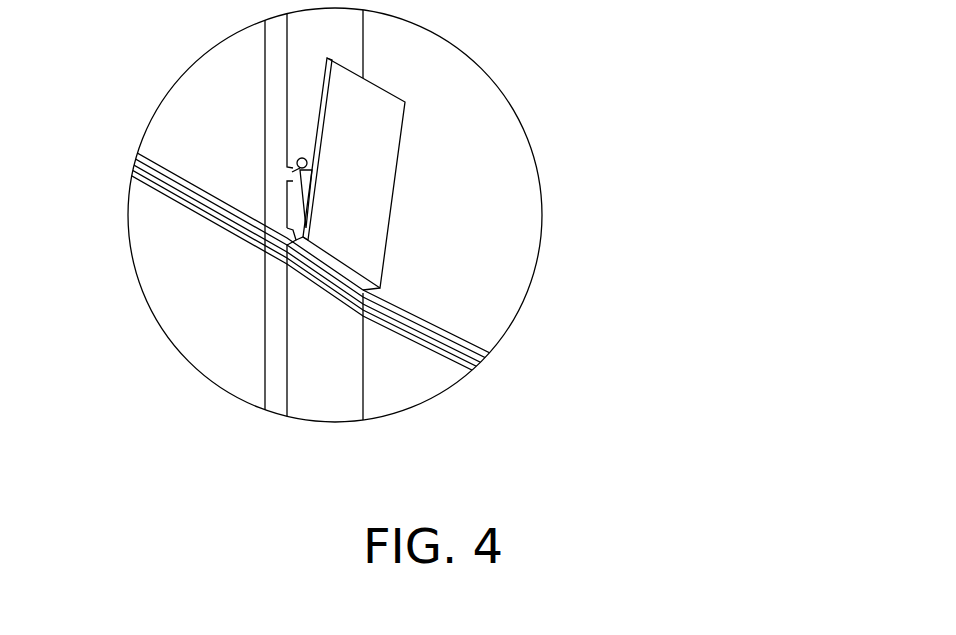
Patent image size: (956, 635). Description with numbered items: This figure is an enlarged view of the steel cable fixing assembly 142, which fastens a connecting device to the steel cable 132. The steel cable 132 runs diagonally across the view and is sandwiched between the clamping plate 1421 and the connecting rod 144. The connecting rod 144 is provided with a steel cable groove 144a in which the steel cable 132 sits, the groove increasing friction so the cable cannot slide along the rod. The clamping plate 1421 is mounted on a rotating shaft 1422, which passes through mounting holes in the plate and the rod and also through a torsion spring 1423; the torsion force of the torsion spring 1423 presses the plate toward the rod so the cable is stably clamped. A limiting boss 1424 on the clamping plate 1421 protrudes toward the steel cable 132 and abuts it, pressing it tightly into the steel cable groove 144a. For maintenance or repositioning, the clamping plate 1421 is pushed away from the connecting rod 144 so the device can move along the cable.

The steel cable 132 is at (158, 176).
The steel cable fixing assembly 142 is at (576, 272).
The connecting rod 144 is at (280, 77).
The steel cable groove 144a is at (274, 251).
The clamping plate 1421 is at (362, 143).
The rotating shaft 1422 is at (308, 167).
The torsion spring 1423 is at (312, 190).
The limiting boss 1424 is at (435, 362).